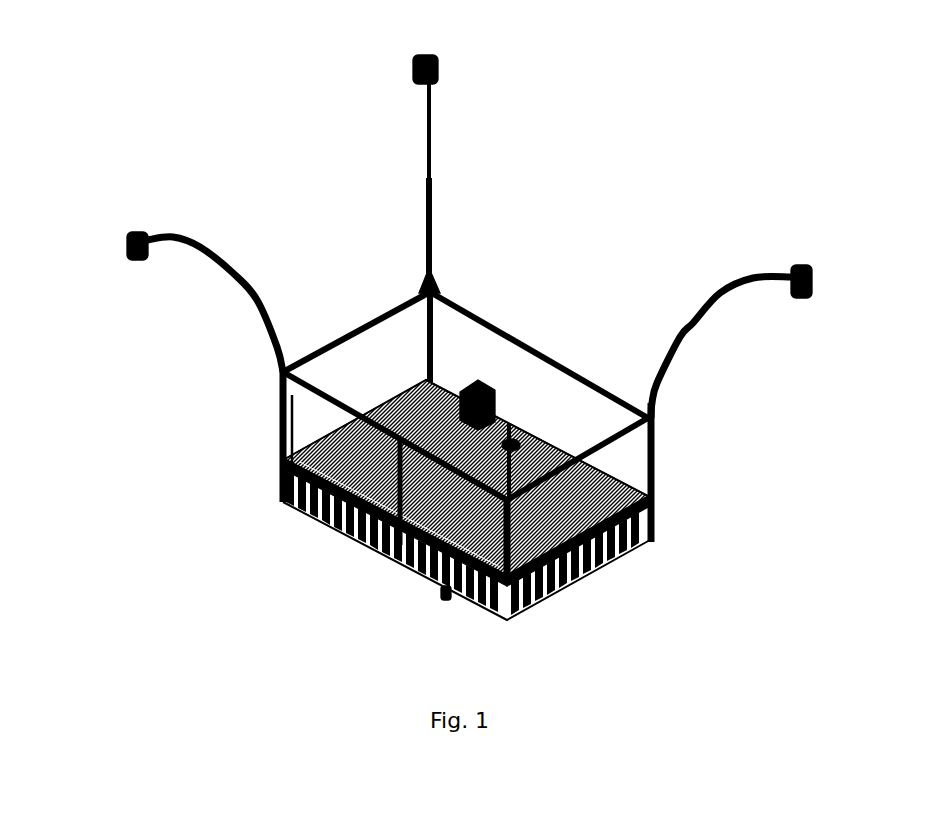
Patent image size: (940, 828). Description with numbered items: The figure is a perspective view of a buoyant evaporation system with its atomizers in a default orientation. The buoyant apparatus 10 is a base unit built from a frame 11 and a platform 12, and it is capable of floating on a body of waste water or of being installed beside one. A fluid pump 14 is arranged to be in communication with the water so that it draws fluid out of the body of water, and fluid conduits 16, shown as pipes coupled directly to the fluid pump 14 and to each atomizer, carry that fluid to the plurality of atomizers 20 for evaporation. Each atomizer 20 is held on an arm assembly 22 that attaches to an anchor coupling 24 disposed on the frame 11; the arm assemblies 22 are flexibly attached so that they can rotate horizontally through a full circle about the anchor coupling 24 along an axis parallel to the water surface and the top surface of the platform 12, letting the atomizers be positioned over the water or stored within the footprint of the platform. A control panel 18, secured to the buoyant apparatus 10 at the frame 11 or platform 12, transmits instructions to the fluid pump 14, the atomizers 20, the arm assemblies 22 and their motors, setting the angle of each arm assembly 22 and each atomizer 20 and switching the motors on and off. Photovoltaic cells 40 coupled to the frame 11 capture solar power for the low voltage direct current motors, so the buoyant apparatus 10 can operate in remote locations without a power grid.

The buoyant apparatus 10 is at (630, 563).
The frame 11 is at (277, 437).
The platform 12 is at (398, 413).
The fluid pump 14 is at (437, 593).
The fluid conduits 16 is at (293, 505).
The control panel 18 is at (483, 380).
The atomizer 20 is at (437, 60).
The arm assembly 22 is at (703, 290).
The anchor coupling 24 is at (653, 405).
The photovoltaic cell 40 is at (620, 452).